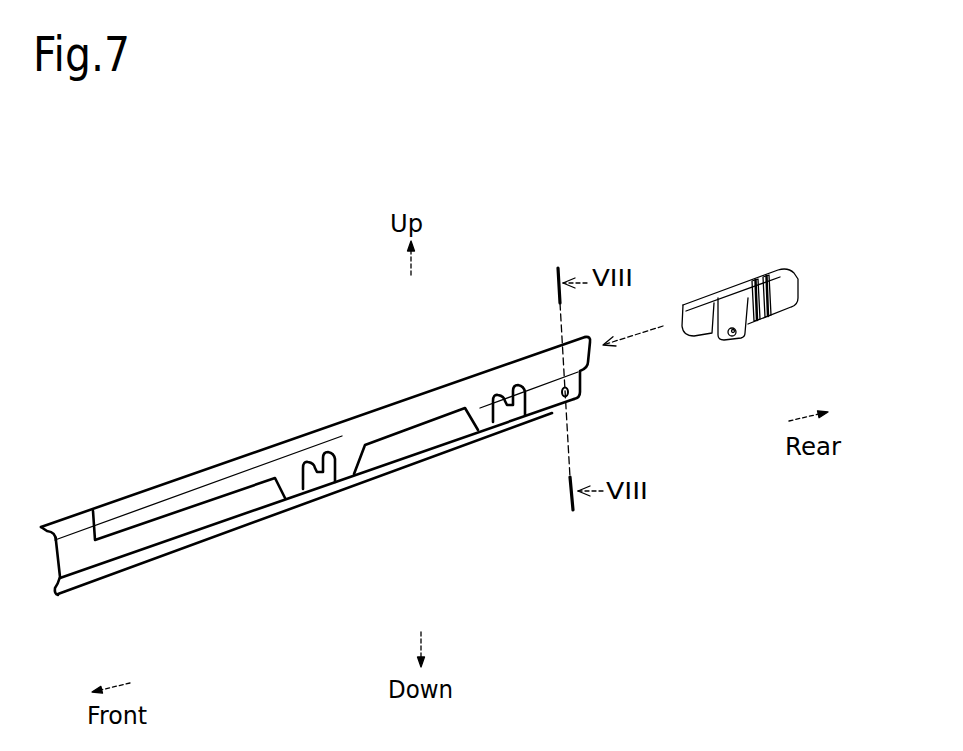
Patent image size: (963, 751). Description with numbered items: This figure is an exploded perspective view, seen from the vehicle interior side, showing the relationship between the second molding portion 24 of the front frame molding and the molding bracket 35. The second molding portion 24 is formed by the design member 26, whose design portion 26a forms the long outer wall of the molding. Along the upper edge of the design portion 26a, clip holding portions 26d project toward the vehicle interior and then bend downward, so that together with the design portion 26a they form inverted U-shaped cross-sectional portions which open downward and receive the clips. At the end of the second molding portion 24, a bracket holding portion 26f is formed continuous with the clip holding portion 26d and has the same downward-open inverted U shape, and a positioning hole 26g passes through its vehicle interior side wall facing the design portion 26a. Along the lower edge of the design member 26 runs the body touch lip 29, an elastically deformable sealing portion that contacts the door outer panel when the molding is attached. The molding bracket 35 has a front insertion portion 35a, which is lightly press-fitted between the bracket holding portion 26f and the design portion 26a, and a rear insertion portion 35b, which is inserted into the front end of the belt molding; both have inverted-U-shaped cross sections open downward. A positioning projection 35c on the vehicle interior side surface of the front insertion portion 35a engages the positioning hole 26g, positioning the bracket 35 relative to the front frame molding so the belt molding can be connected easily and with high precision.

The second molding portion 24 is at (344, 473).
The design member 26 is at (185, 557).
The design portion 26a is at (87, 555).
The clip holding portion 26d is at (342, 462).
The bracket holding portion 26f is at (552, 385).
The positioning hole 26g is at (569, 394).
The body touch lip 29 is at (92, 577).
The molding bracket 35 is at (767, 268).
The front insertion portion 35a is at (696, 323).
The rear insertion portion 35b is at (783, 297).
The positioning projection 35c is at (734, 336).